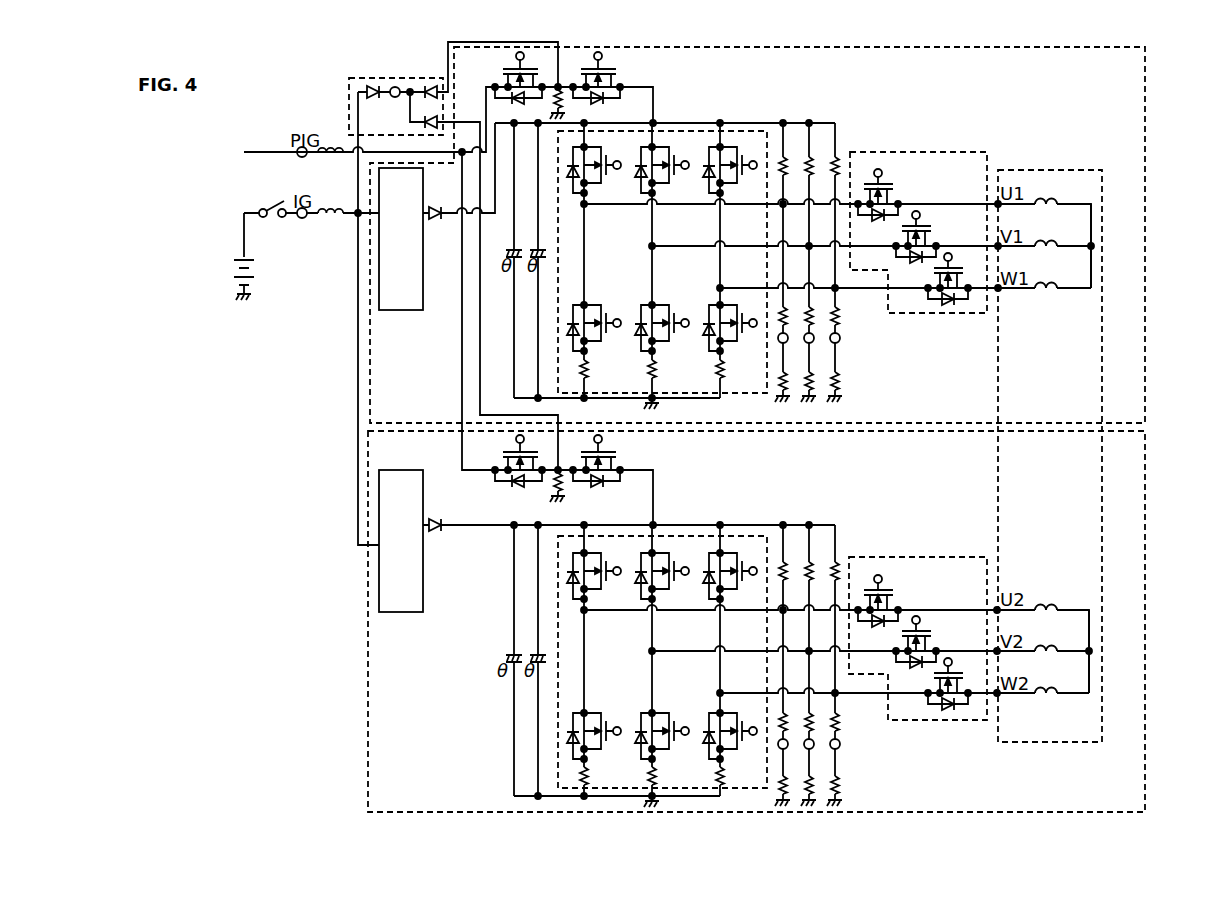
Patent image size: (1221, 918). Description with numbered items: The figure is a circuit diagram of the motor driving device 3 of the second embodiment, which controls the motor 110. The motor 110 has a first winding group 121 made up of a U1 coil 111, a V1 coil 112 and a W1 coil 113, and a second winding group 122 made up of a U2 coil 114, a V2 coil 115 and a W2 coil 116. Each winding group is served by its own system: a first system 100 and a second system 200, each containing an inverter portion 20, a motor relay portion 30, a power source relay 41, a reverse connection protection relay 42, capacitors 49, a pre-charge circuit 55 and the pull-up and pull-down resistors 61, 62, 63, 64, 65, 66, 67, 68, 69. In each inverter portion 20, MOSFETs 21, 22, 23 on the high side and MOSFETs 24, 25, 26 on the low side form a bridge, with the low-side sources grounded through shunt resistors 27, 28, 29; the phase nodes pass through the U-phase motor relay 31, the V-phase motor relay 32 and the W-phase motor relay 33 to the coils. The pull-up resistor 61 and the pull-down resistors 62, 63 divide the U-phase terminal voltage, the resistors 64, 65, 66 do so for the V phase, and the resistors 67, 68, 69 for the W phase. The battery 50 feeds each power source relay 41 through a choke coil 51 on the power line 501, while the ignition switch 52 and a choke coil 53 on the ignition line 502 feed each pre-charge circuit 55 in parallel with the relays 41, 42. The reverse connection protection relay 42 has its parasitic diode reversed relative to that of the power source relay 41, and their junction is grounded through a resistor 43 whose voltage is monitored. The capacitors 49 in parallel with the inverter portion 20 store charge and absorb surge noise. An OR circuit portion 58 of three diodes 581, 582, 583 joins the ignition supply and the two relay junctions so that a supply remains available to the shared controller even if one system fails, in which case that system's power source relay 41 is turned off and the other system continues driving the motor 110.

The motor driving device 3 is at (325, 742).
The inverter portion 20 is at (560, 287).
The MOSFET 21 is at (589, 154).
The MOSFET 22 is at (669, 146).
The MOSFET 23 is at (719, 154).
The MOSFET 24 is at (590, 314).
The MOSFET 25 is at (657, 318).
The MOSFET 26 is at (726, 318).
The shunt resistor 27 is at (589, 366).
The shunt resistor 28 is at (657, 366).
The shunt resistor 29 is at (725, 366).
The motor relay portion 30 is at (960, 152).
The U-phase motor relay 31 is at (890, 196).
The V-phase motor relay 32 is at (930, 238).
The W-phase motor relay 33 is at (960, 280).
The power source relay 41 is at (504, 86).
The reverse connection protection relay 42 is at (608, 86).
The resistor 43 is at (556, 104).
The capacitor 49 is at (536, 248).
The battery 50 is at (252, 262).
The choke coil 51 is at (330, 148).
The ignition switch 52 is at (283, 217).
The choke coil 53 is at (333, 218).
The pre-charge circuit 55 is at (412, 311).
The OR circuit portion 58 is at (348, 80).
The diode 581 is at (375, 87).
The diode 582 is at (428, 87).
The diode 583 is at (428, 118).
The pull-up resistor 61 is at (787, 166).
The pull-down resistor 62 is at (787, 318).
The pull-down resistor 63 is at (787, 378).
The pull-up resistor 64 is at (813, 165).
The pull-down resistor 65 is at (813, 318).
The pull-down resistor 66 is at (813, 378).
The pull-up resistor 67 is at (838, 156).
The pull-down resistor 68 is at (839, 319).
The pull-down resistor 69 is at (840, 383).
The first system 100 is at (1148, 142).
The second system 200 is at (1148, 507).
The motor 110 is at (1033, 170).
The U1 coil 111 is at (1046, 202).
The V1 coil 112 is at (1046, 244).
The W1 coil 113 is at (1046, 286).
The U2 coil 114 is at (1044, 609).
The V2 coil 115 is at (1044, 650).
The W2 coil 116 is at (1044, 692).
The first winding group 121 is at (1088, 203).
The second winding group 122 is at (1086, 609).
The PIG line 501 is at (283, 150).
The IG line 502 is at (284, 202).